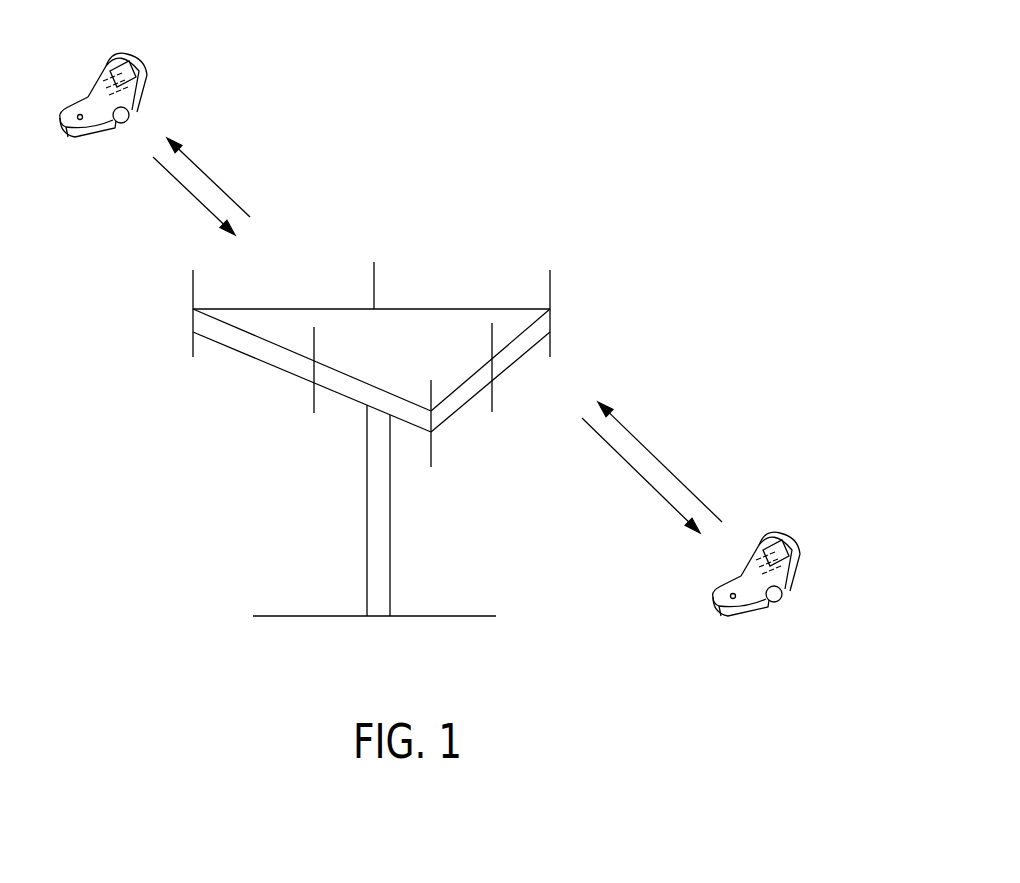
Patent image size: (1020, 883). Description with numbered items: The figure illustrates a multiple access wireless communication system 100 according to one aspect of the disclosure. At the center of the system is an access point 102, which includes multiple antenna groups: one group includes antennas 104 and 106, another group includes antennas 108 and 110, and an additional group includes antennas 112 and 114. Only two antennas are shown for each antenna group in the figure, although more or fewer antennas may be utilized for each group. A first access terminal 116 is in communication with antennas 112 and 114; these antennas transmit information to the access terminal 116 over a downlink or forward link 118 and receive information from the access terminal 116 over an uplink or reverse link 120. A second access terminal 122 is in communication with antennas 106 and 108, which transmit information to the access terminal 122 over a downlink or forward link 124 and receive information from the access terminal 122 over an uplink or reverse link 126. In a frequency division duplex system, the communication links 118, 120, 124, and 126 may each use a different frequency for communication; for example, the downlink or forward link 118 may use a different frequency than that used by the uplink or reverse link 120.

The multiple access wireless communication system 100 is at (617, 80).
The access point 102 is at (380, 617).
The antenna 104 is at (551, 272).
The antenna 106 is at (494, 400).
The antenna 108 is at (432, 455).
The antenna 110 is at (313, 401).
The antenna 112 is at (195, 284).
The antenna 114 is at (375, 262).
The access terminal 116 is at (135, 53).
The downlink or forward link 118 is at (215, 183).
The uplink or reverse link 120 is at (188, 196).
The access terminal 122 is at (787, 537).
The downlink or forward link 124 is at (638, 478).
The uplink or reverse link 126 is at (660, 462).